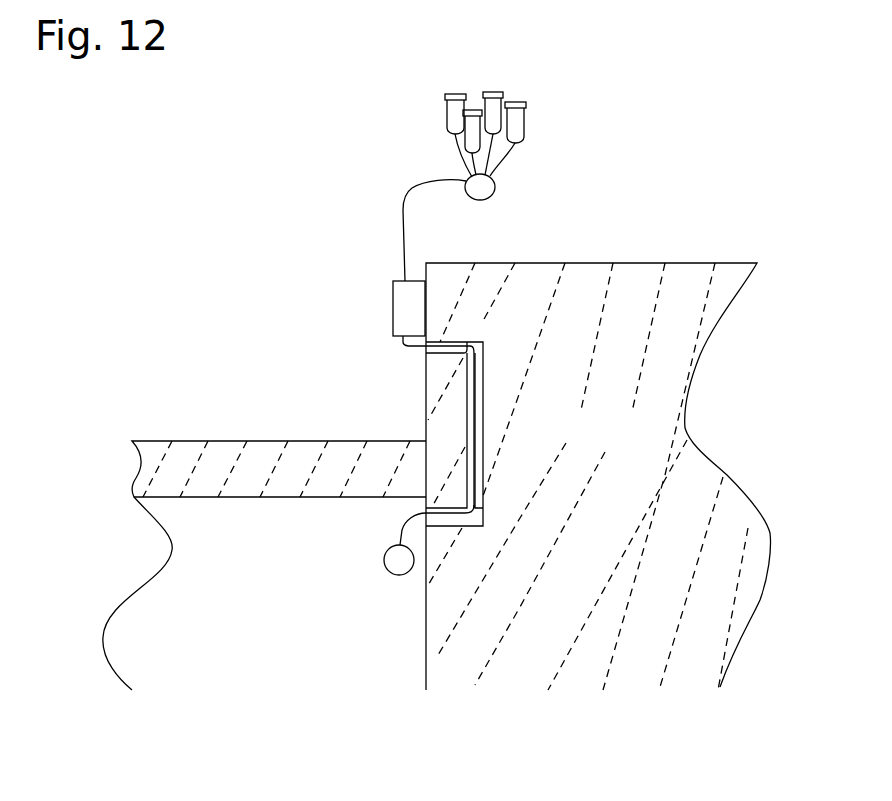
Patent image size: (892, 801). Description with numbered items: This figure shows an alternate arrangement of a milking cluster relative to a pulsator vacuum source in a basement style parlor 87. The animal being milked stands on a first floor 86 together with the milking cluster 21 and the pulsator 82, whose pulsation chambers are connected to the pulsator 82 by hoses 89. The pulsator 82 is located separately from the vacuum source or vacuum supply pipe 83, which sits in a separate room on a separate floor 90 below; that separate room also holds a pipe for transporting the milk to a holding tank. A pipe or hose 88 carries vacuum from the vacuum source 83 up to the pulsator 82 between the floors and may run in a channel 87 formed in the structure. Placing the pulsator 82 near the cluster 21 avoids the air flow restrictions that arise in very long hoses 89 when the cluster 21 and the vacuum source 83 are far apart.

The milking cluster 21 is at (517, 173).
The pulsator 82 is at (401, 308).
The vacuum source or vacuum supply pipe 83 is at (393, 562).
The first floor 86 is at (660, 255).
The basement style parlor 87 is at (220, 255).
The pipe or hose 88 is at (400, 526).
The hoses 89 is at (390, 196).
The separate floor 90 is at (198, 568).